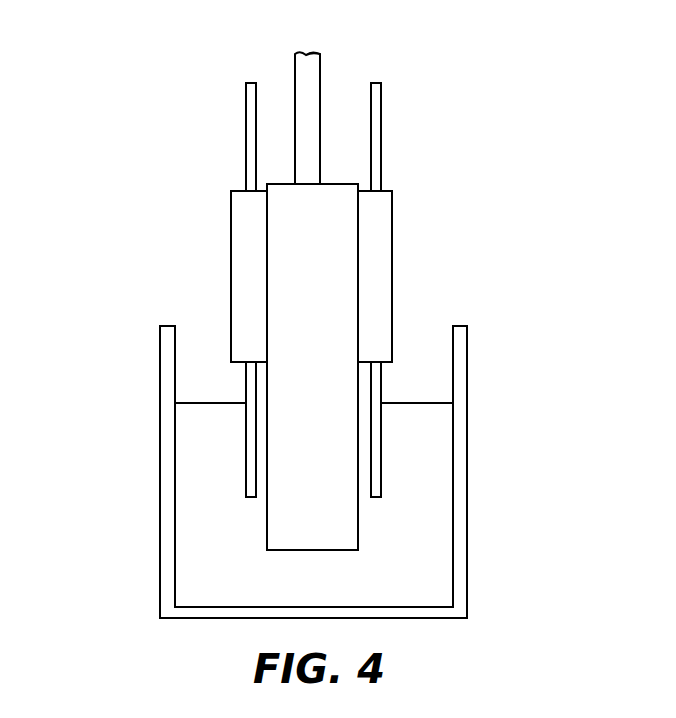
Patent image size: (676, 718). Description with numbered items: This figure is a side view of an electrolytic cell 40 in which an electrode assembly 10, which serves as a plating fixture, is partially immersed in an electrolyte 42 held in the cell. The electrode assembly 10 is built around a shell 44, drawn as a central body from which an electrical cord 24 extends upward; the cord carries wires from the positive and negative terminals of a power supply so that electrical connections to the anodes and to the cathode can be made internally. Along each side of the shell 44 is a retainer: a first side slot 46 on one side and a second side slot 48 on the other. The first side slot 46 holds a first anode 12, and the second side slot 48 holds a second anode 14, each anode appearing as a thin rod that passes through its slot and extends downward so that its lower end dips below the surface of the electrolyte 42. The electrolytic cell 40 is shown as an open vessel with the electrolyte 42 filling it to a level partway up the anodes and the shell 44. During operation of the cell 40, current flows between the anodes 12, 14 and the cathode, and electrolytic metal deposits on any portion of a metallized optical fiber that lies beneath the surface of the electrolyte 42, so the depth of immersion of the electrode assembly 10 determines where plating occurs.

The electrode assembly 10 is at (302, 283).
The first anode 12 is at (250, 448).
The second anode 14 is at (377, 442).
The electrical cord 24 is at (313, 90).
The electrolytic cell 40 is at (105, 357).
The electrolyte 42 is at (423, 492).
The shell 44 is at (326, 312).
The first side slot 46 is at (243, 226).
The second side slot 48 is at (382, 245).